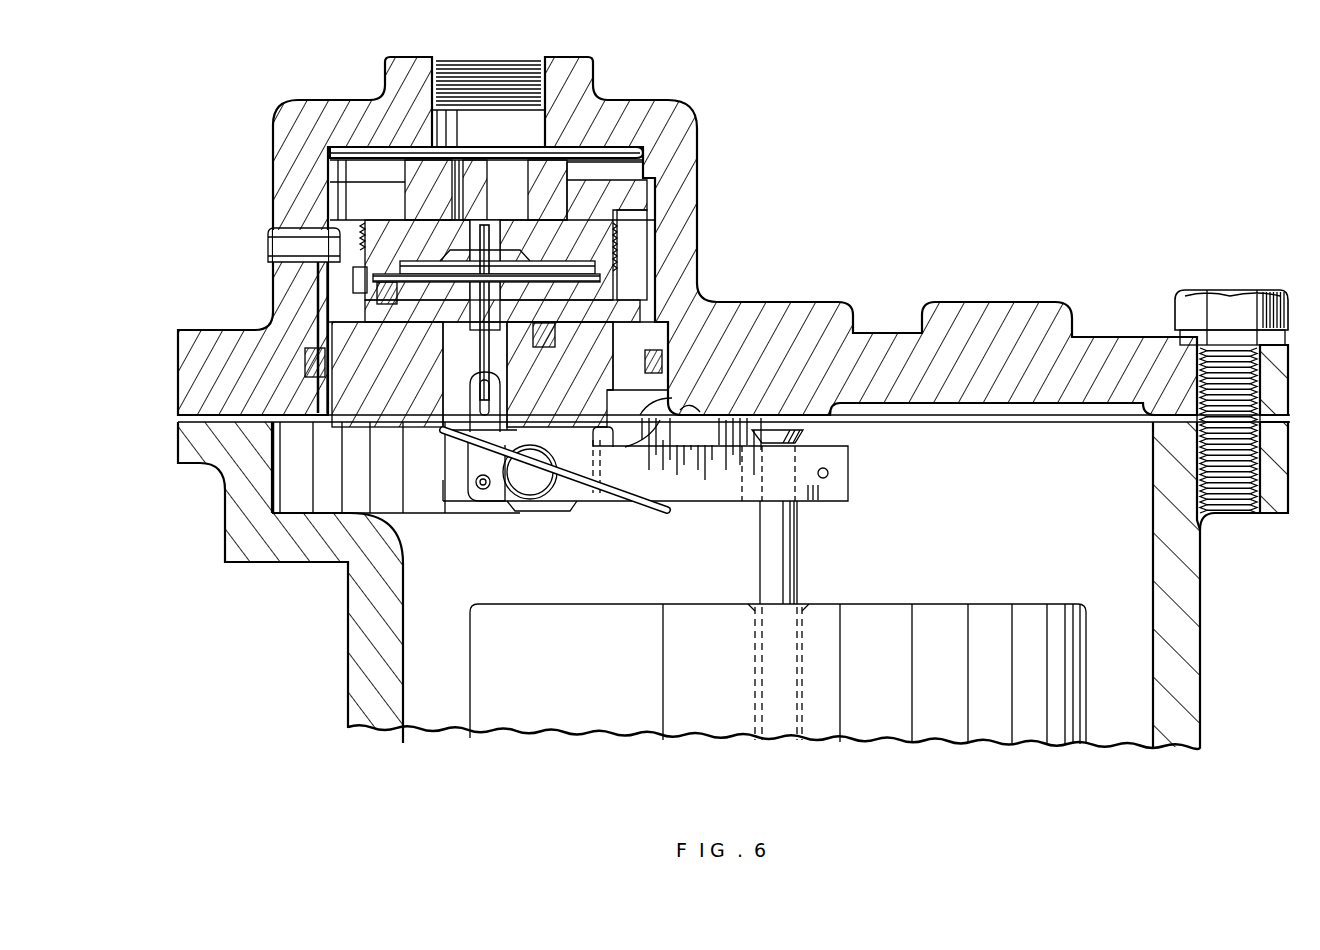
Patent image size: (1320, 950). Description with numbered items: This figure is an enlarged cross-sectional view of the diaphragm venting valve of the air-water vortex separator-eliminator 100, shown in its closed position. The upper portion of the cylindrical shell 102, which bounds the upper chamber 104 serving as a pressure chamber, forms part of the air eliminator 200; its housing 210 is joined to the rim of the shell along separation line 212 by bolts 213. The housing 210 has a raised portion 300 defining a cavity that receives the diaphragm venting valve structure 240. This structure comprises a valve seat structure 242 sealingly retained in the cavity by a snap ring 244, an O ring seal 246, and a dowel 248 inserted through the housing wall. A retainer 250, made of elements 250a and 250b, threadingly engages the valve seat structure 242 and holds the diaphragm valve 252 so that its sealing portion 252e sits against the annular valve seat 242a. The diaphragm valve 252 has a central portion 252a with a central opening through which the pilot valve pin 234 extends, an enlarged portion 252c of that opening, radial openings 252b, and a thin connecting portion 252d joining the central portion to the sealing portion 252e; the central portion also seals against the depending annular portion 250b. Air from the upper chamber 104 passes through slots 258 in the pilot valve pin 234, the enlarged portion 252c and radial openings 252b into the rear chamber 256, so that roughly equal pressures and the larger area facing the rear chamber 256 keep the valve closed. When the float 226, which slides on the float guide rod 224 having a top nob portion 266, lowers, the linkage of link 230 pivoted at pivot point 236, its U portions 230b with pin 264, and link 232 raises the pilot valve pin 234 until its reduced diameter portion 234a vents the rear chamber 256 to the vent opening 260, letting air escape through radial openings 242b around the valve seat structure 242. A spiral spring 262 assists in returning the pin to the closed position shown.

The air-water vortex separator-eliminator 100 is at (328, 640).
The cylindrical shell 102 is at (1195, 628).
The upper chamber 104 is at (427, 578).
The air eliminator 200 is at (925, 285).
The housing 210 is at (823, 302).
The separation line 212 is at (1263, 485).
The bolts 213 is at (1224, 300).
The float guide rod 224 is at (796, 590).
The float 226 is at (1002, 610).
The link 230 is at (722, 498).
The expanded U portion 230b is at (818, 494).
The link 232 is at (482, 492).
The pilot valve pin 234 is at (488, 377).
The reduced diameter portion 234a is at (470, 245).
The pivot point 236 is at (537, 480).
The diaphragm venting valve structure 240 is at (655, 225).
The valve seat structure 242 is at (360, 442).
The annular valve seat 242a is at (626, 456).
The radial openings 242b is at (318, 326).
The snap ring 244 is at (701, 449).
The O ring seal 246 is at (705, 350).
The dowel 248 is at (272, 248).
The retainer 250 is at (592, 196).
The retainer element 250a is at (403, 173).
The depending annular portion 250b is at (512, 206).
The diaphragm valve 252 is at (655, 290).
The central portion 252a is at (650, 272).
The radial openings 252b is at (362, 178).
The enlarged portion 252c is at (627, 213).
The connecting portion 252d is at (603, 440).
The sealing portion 252e is at (578, 337).
The rear chamber 256 is at (360, 258).
The slots 258 is at (438, 435).
The vent opening 260 is at (463, 122).
The spiral spring 262 is at (657, 505).
The pin 264 is at (828, 474).
The top nob portion 266 is at (808, 430).
The raised portion 300 is at (622, 280).